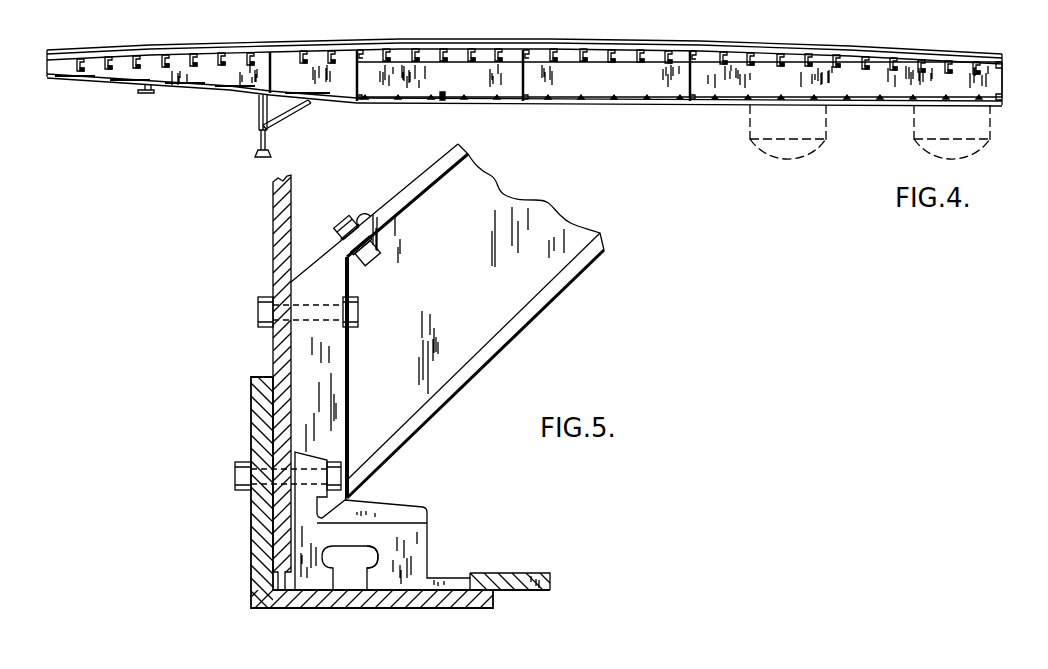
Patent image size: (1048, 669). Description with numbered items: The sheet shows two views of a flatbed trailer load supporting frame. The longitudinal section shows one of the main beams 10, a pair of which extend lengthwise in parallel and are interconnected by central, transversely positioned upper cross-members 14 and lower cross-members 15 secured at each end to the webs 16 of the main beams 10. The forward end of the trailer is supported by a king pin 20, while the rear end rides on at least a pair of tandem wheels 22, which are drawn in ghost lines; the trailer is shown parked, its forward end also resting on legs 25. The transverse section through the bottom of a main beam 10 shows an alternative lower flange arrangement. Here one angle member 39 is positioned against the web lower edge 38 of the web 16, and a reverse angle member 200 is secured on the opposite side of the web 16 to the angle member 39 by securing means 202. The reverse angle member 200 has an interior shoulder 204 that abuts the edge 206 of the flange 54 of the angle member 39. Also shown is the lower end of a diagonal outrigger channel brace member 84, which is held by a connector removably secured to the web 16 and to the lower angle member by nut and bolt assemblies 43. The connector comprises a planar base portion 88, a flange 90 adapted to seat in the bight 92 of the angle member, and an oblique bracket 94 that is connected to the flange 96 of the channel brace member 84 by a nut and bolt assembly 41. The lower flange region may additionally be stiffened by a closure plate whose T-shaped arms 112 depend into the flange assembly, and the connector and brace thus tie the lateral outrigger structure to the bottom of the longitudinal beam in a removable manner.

In FIG. 4, the main beams 10 is at (562, 82).
In FIG. 4, the upper cross-members 14 is at (643, 57).
In FIG. 4, the lower cross-members 15 is at (527, 105).
In FIG. 4, the web 16 is at (644, 85).
In FIG. 5, the web 16 is at (272, 230).
In FIG. 4, the king pin 20 is at (154, 94).
In FIG. 4, the tandem wheels 22 is at (915, 132).
In FIG. 4, the legs 25 is at (259, 144).
In FIG. 5, the web lower edge 38 is at (280, 556).
In FIG. 5, the angle member 39 is at (428, 522).
In FIG. 5, the nut and bolt assembly 41 is at (388, 250).
In FIG. 5, the nut and bolt assemblies 43 is at (258, 310).
In FIG. 5, the flange 54 is at (407, 587).
In FIG. 5, the diagonal outrigger channel brace member 84 is at (540, 315).
In FIG. 5, the planar base portion 88 is at (349, 368).
In FIG. 5, the flange 90 is at (397, 503).
In FIG. 5, the bight 92 is at (352, 499).
In FIG. 5, the oblique bracket 94 is at (359, 230).
In FIG. 5, the flange 96 is at (425, 200).
In FIG. 5, the T-shaped arms 112 is at (376, 557).
In FIG. 5, the reverse angle member 200 is at (492, 604).
In FIG. 5, the securing means 202 is at (236, 464).
In FIG. 5, the interior shoulder 204 is at (476, 574).
In FIG. 5, the edge 206 is at (471, 572).